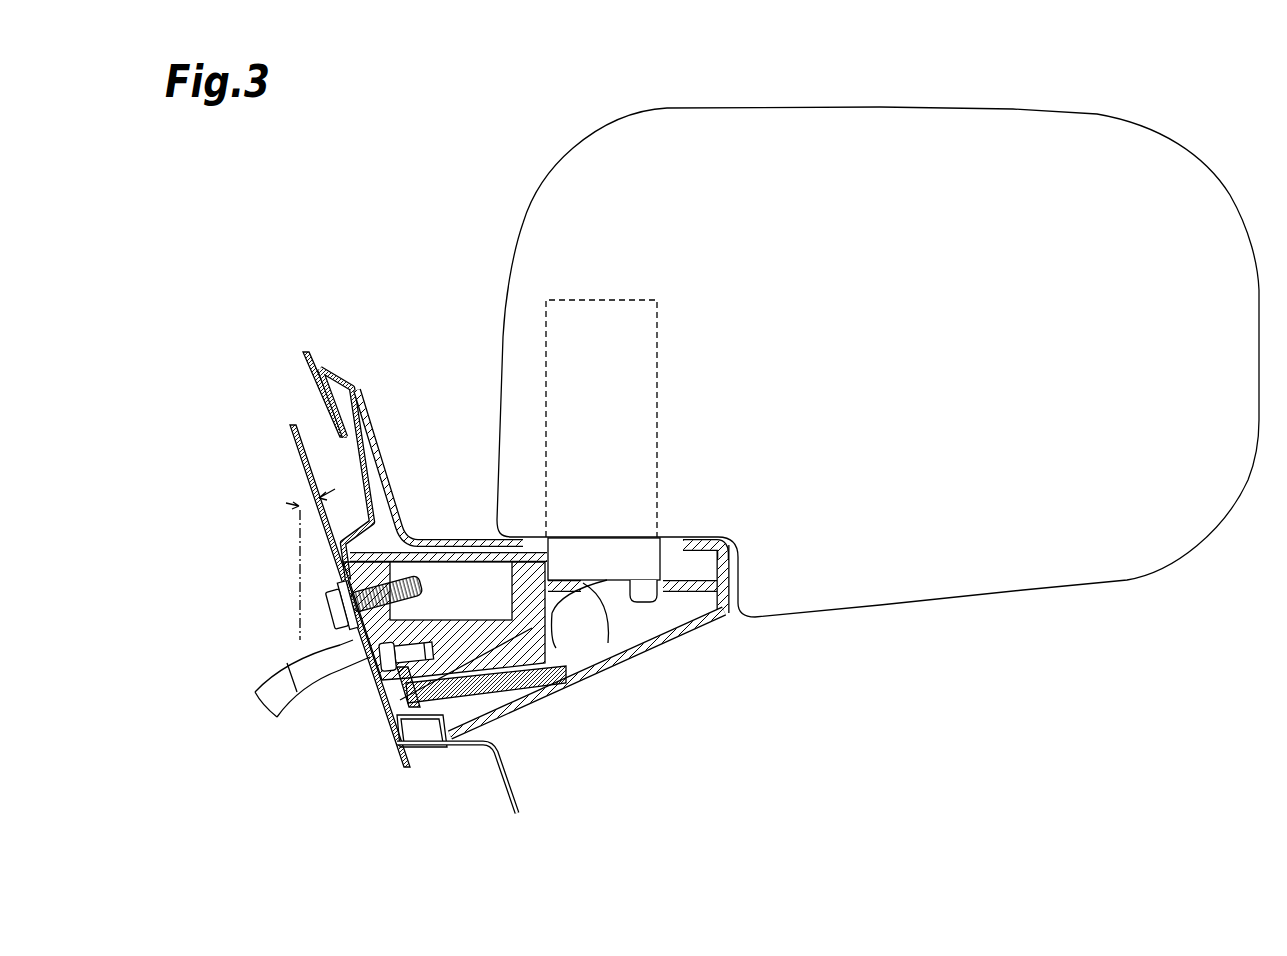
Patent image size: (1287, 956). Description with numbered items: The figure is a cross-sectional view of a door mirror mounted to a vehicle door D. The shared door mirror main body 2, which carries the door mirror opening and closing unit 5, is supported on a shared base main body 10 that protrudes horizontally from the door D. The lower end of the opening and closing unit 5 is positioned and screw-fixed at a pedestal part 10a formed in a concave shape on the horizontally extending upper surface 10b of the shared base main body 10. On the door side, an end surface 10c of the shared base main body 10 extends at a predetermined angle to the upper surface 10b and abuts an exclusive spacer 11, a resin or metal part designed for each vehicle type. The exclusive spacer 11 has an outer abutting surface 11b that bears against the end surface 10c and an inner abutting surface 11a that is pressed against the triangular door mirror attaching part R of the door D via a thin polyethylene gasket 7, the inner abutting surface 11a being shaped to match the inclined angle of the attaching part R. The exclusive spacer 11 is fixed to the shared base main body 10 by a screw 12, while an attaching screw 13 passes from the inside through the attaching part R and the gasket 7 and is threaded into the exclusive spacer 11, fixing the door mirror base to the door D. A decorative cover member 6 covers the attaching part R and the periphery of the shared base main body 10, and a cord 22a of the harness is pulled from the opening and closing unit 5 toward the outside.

The door mirror main body 2 is at (1025, 590).
The door mirror opening and closing unit 5 is at (638, 552).
The cover member 6 is at (388, 483).
The gasket 7 is at (353, 457).
The shared base main body 10 is at (530, 655).
The pedestal part 10a is at (643, 588).
The upper surface 10b is at (693, 570).
The end surface 10c is at (415, 728).
The exclusive spacer 11 is at (360, 640).
The inner abutting surface 11a is at (380, 703).
The outer abutting surface 11b is at (403, 627).
The screw 12 is at (502, 717).
The attaching screw 13 is at (328, 610).
The cord 22a is at (597, 622).
The door mirror attaching part R is at (318, 545).
The door D is at (517, 790).